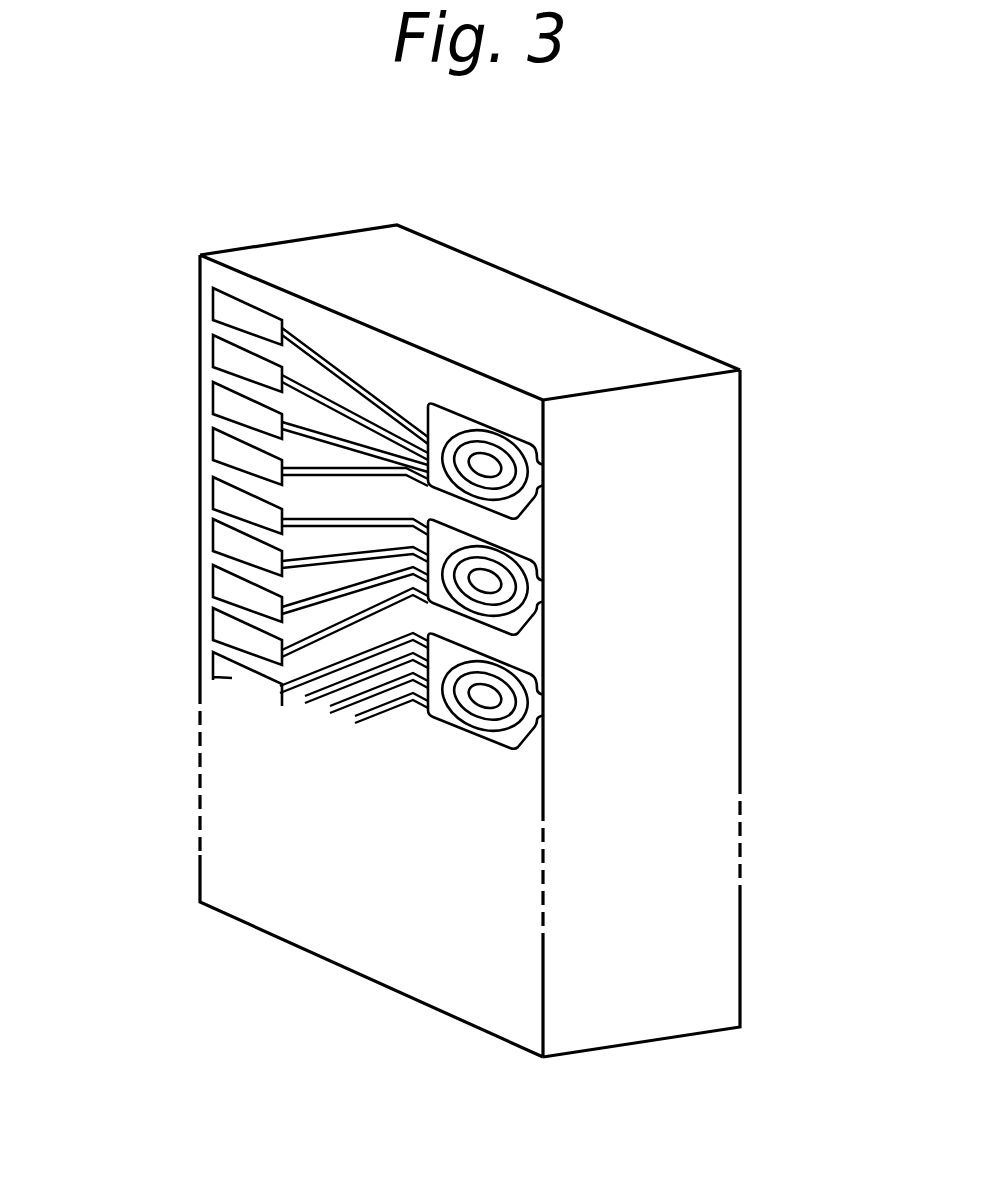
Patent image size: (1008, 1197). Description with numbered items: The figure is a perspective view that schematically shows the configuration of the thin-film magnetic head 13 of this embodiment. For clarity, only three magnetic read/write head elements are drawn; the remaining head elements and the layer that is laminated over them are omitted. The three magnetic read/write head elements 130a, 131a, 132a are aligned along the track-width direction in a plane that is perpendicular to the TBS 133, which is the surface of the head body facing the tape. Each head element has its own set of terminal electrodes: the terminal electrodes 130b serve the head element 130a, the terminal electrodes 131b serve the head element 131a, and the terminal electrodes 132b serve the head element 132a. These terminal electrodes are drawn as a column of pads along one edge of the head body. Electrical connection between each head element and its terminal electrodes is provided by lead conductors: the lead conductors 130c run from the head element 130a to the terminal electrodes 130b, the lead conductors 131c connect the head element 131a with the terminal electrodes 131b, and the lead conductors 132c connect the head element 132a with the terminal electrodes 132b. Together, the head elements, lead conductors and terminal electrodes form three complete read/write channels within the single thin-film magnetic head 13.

The thin-film magnetic head 13 is at (607, 272).
The TBS 133 is at (702, 747).
The magnetic read/write head element 130a is at (543, 483).
The magnetic read/write head element 131a is at (543, 598).
The magnetic read/write head element 132a is at (543, 703).
The terminal electrode 130b is at (222, 440).
The terminal electrode 131b is at (222, 620).
The terminal electrode 132b is at (215, 664).
The lead conductor 130c is at (395, 467).
The lead conductor 131c is at (365, 610).
The lead conductor 132c is at (363, 700).